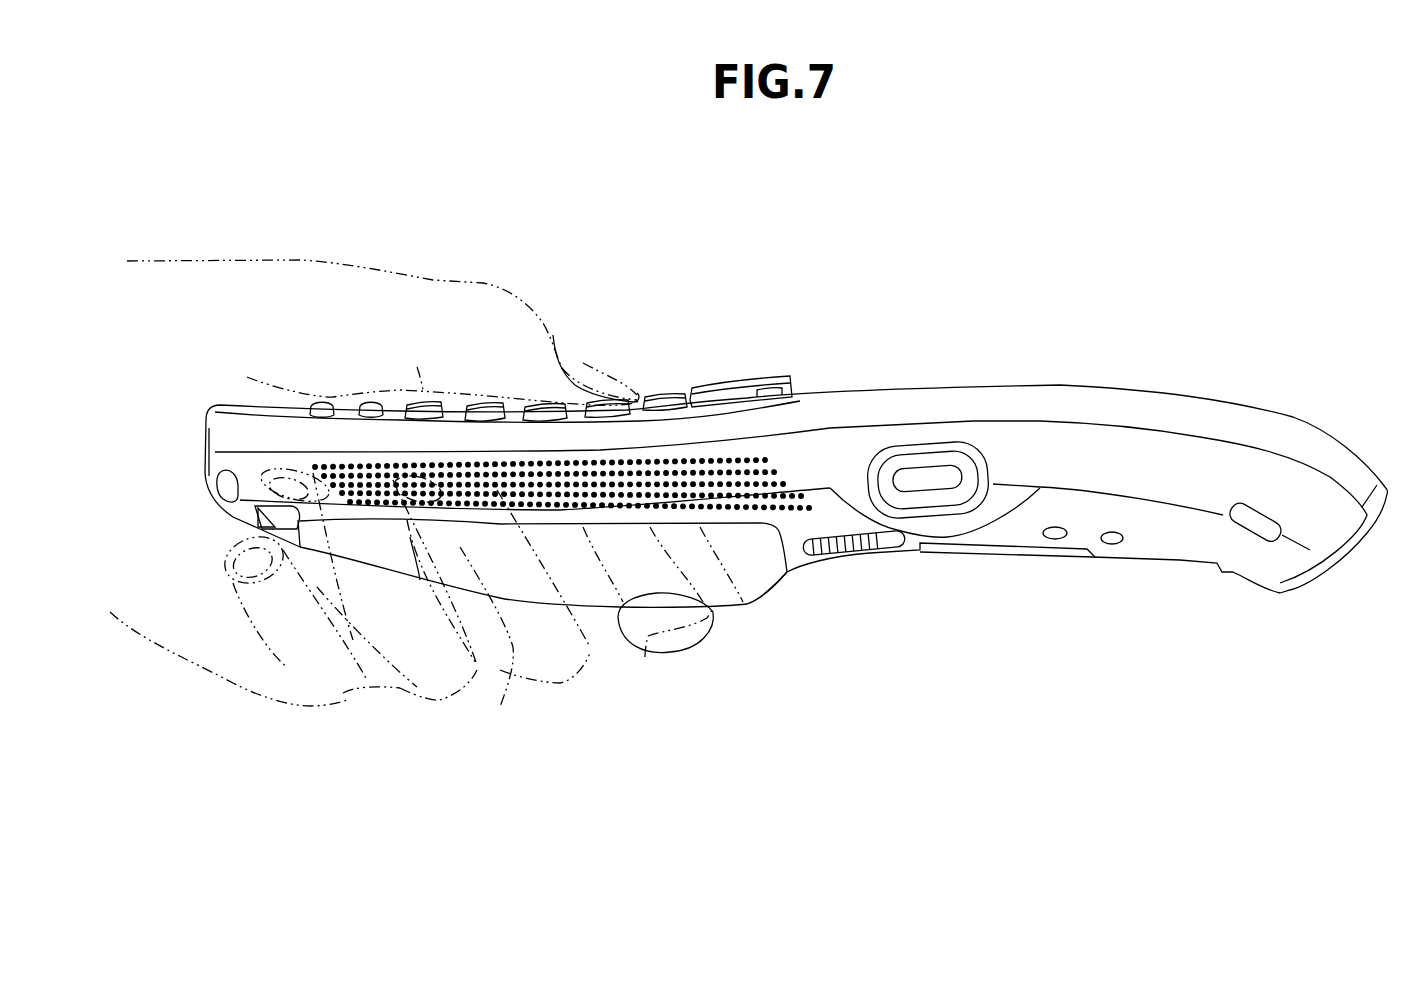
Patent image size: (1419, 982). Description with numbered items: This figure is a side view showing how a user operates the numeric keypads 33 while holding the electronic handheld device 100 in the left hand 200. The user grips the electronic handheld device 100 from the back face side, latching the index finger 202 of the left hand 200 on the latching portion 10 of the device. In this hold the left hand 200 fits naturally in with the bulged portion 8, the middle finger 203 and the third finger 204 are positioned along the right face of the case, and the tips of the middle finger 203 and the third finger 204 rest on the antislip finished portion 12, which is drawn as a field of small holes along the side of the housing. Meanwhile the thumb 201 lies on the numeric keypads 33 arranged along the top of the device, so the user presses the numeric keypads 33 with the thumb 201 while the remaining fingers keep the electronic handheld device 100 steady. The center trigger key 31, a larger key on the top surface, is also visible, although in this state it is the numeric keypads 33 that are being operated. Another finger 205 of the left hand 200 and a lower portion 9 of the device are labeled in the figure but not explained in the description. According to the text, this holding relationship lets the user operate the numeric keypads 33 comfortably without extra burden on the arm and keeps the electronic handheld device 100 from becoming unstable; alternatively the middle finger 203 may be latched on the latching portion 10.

The electronic handheld device 100 is at (1220, 397).
The bulged portion 8 is at (476, 655).
The lower housing 9 is at (765, 593).
The latching portion 10 is at (660, 593).
The antislip finished portion 12 is at (770, 470).
The center trigger key 31 is at (735, 380).
The numeric keypads 33 is at (598, 398).
The left hand 200 is at (222, 262).
The thumb 201 is at (550, 337).
The index finger 202 is at (645, 657).
The middle finger 203 is at (561, 670).
The third finger 204 is at (440, 700).
The little finger 205 is at (343, 693).